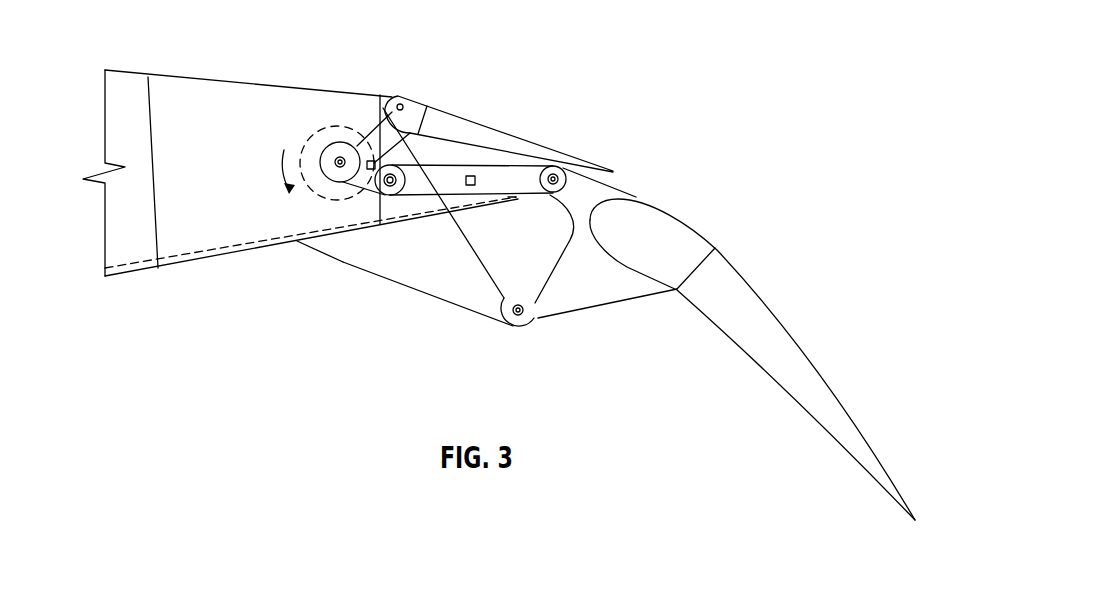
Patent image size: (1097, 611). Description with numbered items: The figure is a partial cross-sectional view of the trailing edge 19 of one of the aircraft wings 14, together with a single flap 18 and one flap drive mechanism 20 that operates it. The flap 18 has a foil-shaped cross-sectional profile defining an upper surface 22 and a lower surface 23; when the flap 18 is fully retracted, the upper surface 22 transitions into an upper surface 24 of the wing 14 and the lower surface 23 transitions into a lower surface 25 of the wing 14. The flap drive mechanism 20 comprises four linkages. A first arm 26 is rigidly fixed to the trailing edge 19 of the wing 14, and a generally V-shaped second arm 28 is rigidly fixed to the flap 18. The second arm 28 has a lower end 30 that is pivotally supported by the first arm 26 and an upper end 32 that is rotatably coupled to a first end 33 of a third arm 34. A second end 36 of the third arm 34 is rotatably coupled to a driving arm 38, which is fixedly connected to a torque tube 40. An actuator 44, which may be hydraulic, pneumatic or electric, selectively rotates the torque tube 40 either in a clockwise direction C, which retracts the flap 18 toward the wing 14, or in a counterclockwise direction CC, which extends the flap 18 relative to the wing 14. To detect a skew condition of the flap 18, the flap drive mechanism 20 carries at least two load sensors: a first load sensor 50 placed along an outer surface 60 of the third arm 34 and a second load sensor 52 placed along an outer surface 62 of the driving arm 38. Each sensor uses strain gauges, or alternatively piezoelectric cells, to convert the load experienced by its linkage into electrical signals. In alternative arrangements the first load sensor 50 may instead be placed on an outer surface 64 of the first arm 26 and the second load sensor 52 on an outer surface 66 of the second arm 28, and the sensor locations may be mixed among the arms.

The wing 14 is at (202, 90).
The flap 18 is at (752, 359).
The trailing edge 19 is at (648, 50).
The flap drive mechanism 20 is at (378, 335).
The upper surface 22 is at (787, 330).
The lower surface 23 is at (760, 363).
The upper surface of the wing 24 is at (445, 110).
The lower surface of the wing 25 is at (478, 213).
The first arm 26 is at (343, 258).
The second arm 28 is at (557, 303).
The lower end 30 is at (520, 318).
The upper end 32 is at (557, 167).
The first end 33 is at (525, 168).
The third arm 34 is at (499, 173).
The second end 36 is at (397, 197).
The driving arm 38 is at (357, 188).
The torque tube 40 is at (320, 165).
The actuator 44 is at (313, 117).
The first load sensor 50 is at (472, 176).
The second load sensor 52 is at (405, 104).
The outer surface of the third arm 60 is at (538, 192).
The outer surface of the driving arm 62 is at (366, 132).
The outer surface of the first arm 64 is at (480, 300).
The outer surface of the second arm 66 is at (607, 280).
The clockwise direction C is at (366, 106).
The counterclockwise direction CC is at (281, 175).